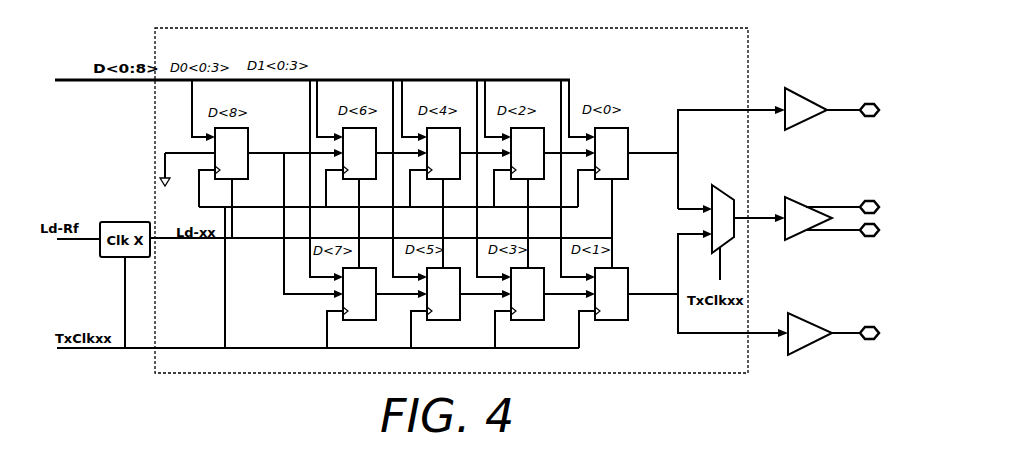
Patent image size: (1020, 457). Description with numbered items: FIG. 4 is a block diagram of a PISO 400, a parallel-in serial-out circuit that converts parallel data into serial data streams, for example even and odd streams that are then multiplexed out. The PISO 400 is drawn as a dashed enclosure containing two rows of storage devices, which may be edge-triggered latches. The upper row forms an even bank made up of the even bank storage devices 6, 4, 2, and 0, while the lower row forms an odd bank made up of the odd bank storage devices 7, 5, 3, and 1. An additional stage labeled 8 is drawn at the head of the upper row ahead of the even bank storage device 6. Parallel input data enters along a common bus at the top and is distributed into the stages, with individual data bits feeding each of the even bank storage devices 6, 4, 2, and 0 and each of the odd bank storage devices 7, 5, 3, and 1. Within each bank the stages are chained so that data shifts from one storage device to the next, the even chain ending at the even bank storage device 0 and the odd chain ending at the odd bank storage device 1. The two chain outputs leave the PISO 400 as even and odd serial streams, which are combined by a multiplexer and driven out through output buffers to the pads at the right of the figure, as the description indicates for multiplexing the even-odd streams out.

The PISO 400 is at (730, 56).
The flip-flop stage 8 is at (231, 153).
The even bank storage device 6 is at (359, 153).
The even bank storage device 4 is at (443, 153).
The even bank storage device 2 is at (527, 153).
The even bank storage device 0 is at (611, 153).
The odd bank storage device 7 is at (359, 294).
The odd bank storage device 5 is at (443, 294).
The odd bank storage device 3 is at (527, 294).
The odd bank storage device 1 is at (611, 294).